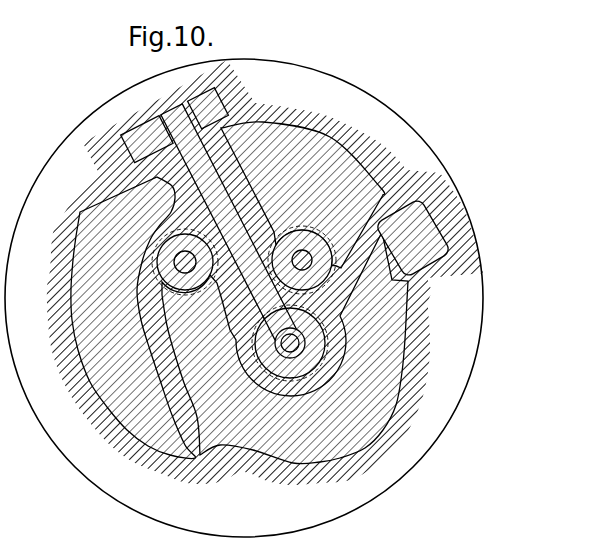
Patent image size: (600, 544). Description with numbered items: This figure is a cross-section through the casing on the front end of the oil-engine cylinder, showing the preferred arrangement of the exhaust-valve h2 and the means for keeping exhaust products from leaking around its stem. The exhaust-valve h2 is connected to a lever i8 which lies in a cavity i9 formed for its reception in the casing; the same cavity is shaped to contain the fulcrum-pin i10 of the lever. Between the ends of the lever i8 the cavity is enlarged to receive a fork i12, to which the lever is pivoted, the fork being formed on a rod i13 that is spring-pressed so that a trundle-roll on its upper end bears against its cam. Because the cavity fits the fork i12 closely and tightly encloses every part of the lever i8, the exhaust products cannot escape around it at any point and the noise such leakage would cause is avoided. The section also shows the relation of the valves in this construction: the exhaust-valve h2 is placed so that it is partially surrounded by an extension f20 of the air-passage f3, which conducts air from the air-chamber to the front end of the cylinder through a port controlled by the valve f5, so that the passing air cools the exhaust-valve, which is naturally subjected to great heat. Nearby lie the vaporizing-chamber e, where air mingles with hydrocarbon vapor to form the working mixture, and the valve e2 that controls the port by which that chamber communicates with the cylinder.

The vaporizing-chamber e is at (133, 318).
The valve e2 is at (309, 242).
The air-passage f3 is at (413, 238).
The valve f5 is at (190, 276).
The wall f20 is at (390, 366).
The exhaust-valve h2 is at (313, 350).
The lever i8 is at (215, 205).
The cavity i9 is at (230, 168).
The fulcrum-pin i10 is at (193, 110).
The fork i12 is at (318, 248).
The rod i13 is at (288, 358).